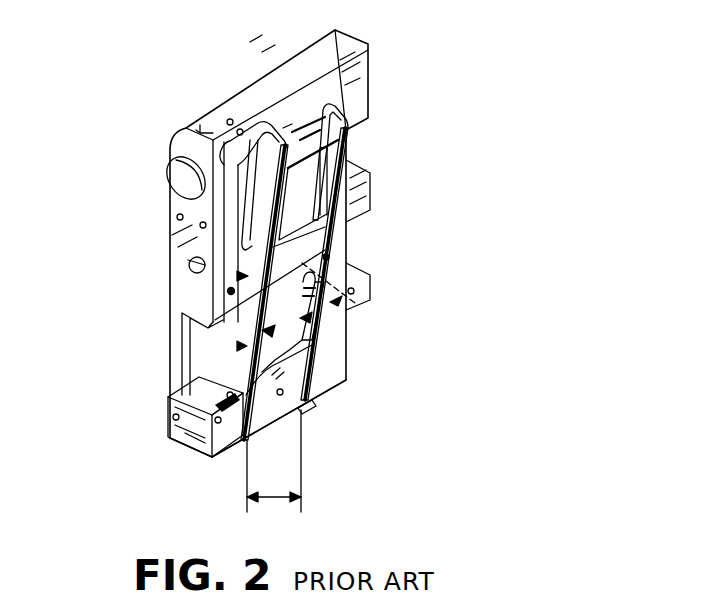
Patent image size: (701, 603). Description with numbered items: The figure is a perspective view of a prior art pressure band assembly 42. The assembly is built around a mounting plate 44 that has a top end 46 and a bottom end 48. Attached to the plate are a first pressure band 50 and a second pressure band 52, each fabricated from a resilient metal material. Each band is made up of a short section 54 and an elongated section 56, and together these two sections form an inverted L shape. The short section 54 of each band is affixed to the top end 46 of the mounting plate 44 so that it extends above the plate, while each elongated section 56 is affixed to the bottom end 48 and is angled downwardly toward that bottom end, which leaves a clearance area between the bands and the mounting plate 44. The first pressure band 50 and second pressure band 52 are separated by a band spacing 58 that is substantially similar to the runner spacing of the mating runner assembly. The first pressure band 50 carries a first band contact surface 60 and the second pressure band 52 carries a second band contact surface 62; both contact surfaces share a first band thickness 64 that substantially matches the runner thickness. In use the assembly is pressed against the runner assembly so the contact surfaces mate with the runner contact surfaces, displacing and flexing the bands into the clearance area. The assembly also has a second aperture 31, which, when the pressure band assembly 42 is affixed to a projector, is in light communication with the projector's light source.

The pressure band assembly 42 is at (520, 106).
The mounting plate 44 is at (190, 135).
The top end 46 is at (245, 118).
The bottom end 48 is at (320, 397).
The first pressure band 50 is at (368, 190).
The second pressure band 52 is at (248, 277).
The short section 54 is at (290, 125).
The elongated section 56 is at (328, 322).
The band spacing 58 is at (247, 497).
The first band contact surface 60 is at (338, 238).
The second band contact surface 62 is at (250, 222).
The first band thickness 64 is at (240, 347).
The second aperture 31 is at (200, 390).